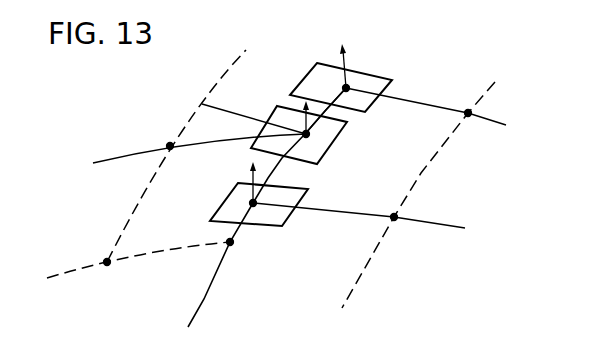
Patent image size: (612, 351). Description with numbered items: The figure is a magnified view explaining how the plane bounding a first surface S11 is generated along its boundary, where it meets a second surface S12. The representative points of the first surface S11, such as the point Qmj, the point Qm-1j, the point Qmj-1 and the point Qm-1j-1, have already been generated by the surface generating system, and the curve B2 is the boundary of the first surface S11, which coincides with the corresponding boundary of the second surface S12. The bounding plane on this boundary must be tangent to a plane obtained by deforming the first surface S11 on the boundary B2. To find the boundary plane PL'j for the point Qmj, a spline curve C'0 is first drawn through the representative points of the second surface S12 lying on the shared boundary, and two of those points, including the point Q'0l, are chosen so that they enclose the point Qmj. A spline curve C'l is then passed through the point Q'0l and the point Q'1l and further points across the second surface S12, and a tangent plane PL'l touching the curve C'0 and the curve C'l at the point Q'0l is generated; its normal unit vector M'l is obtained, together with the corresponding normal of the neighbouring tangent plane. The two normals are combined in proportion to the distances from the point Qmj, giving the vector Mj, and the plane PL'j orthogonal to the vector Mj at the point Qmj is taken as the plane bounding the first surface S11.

The surface S11 is at (146, 172).
The surface S12 is at (418, 195).
The boundary B2 is at (205, 299).
The spline curve C'0 is at (354, 79).
The representative point Qmj is at (202, 104).
The representative point Qm-1j is at (170, 146).
The representative point Qmj-1 is at (230, 243).
The representative point Qm-1j-1 is at (107, 262).
The normal unit vector Mj is at (302, 105).
The boundary plane PL'j is at (318, 137).
The tangent plane PL'l is at (259, 224).
The representative point Q'0l is at (249, 244).
The normal unit vector M'l is at (300, 182).
The spline curve C'l is at (384, 226).
The representative point Q'1l is at (420, 241).